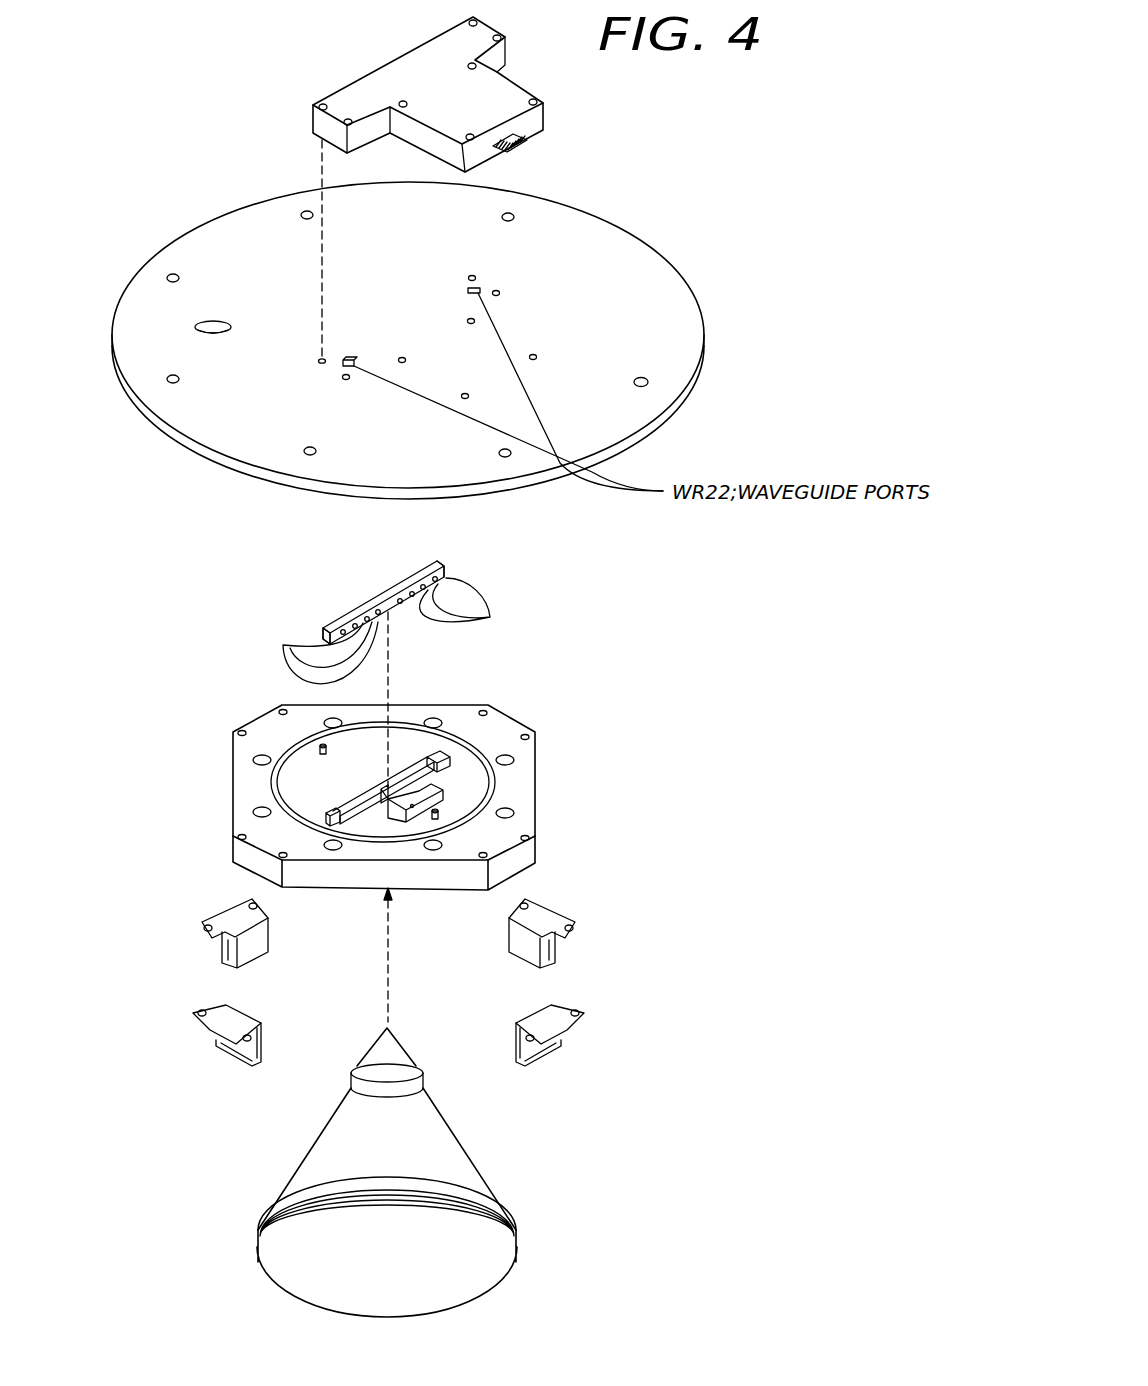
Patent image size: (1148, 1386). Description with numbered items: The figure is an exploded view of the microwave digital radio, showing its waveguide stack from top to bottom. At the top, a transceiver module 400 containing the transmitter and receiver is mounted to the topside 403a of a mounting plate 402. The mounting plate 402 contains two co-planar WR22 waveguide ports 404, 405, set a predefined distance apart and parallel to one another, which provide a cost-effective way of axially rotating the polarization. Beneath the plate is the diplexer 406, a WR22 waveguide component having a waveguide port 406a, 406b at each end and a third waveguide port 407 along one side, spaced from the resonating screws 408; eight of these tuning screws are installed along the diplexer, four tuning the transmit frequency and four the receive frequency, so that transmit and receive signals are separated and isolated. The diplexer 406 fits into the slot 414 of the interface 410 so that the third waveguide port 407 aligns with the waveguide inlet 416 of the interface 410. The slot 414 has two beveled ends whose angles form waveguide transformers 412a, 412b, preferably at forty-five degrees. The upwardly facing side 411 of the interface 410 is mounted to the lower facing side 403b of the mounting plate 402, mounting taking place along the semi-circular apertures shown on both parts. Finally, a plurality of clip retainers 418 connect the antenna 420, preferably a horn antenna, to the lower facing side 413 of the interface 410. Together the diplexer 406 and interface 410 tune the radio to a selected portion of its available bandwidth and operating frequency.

The transceiver module 400 is at (384, 62).
The mounting plate 402 is at (630, 238).
The topside of mounting plate 403a is at (665, 312).
The lower facing side of mounting plate 403b is at (228, 466).
The waveguide port 404 is at (348, 358).
The waveguide port 405 is at (480, 287).
The diplexer 406 is at (400, 573).
The end waveguide port of diplexer 406a is at (323, 630).
The end waveguide port of diplexer 406b is at (448, 572).
The third waveguide port 407 is at (383, 582).
The resonating screws 408 is at (285, 645).
The interface 410 is at (536, 762).
The upwardly facing side of interface 411 is at (520, 832).
The waveguide transformer 412a is at (330, 818).
The waveguide transformer 412b is at (447, 756).
The lower facing side of interface 413 is at (232, 826).
The slot 414 is at (397, 805).
The waveguide inlet 416 is at (383, 791).
The clip retainers 418 is at (222, 923).
The antenna 420 is at (453, 1160).